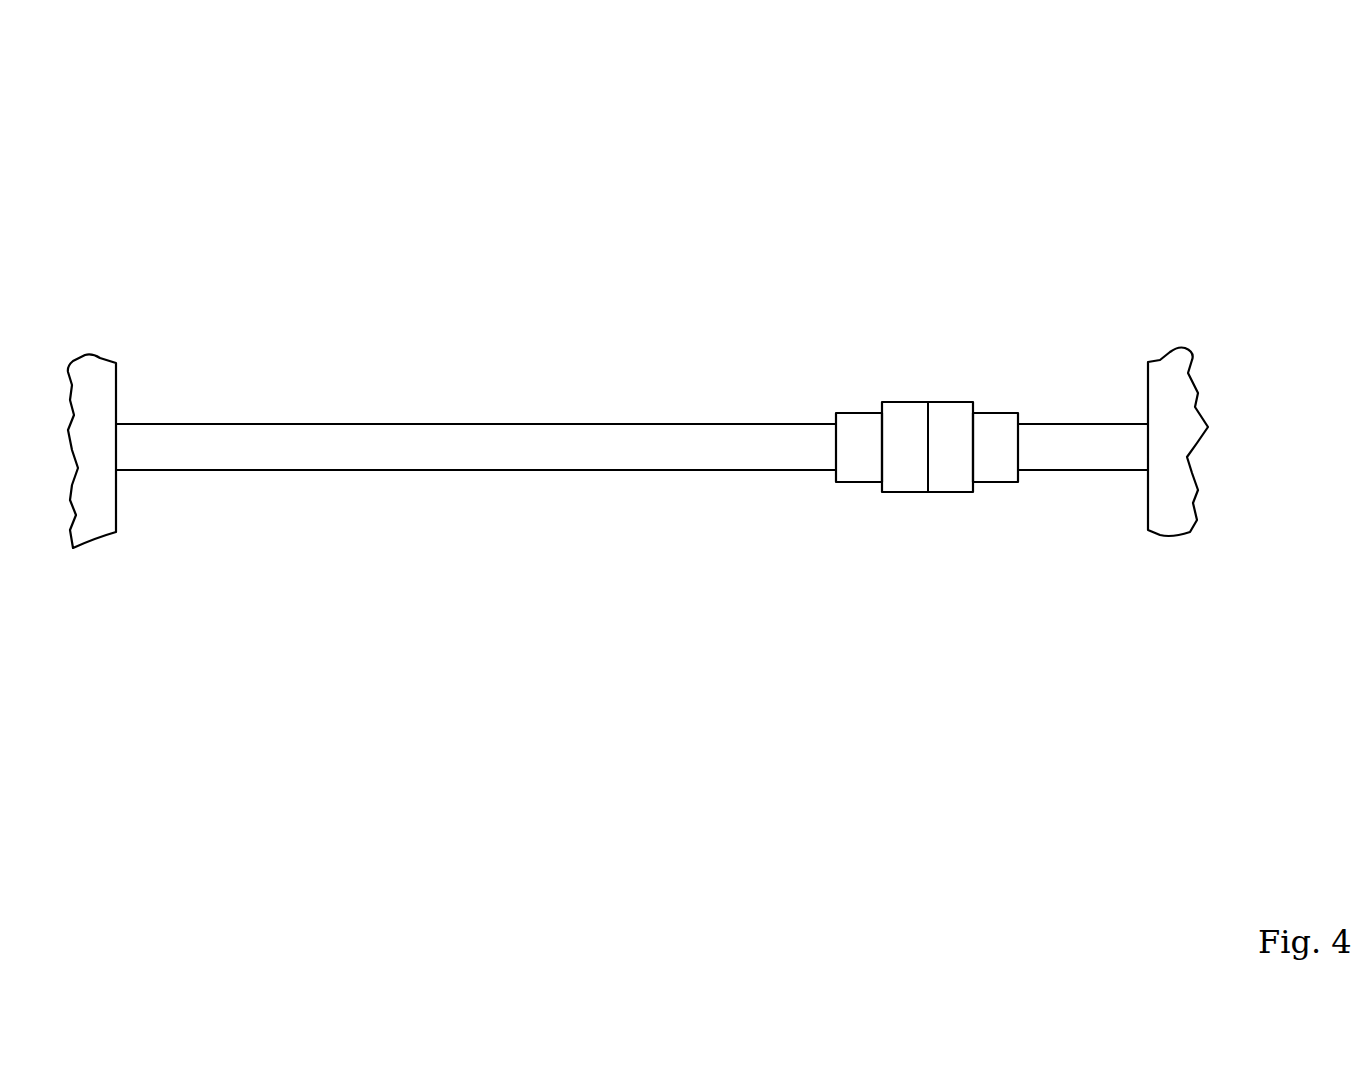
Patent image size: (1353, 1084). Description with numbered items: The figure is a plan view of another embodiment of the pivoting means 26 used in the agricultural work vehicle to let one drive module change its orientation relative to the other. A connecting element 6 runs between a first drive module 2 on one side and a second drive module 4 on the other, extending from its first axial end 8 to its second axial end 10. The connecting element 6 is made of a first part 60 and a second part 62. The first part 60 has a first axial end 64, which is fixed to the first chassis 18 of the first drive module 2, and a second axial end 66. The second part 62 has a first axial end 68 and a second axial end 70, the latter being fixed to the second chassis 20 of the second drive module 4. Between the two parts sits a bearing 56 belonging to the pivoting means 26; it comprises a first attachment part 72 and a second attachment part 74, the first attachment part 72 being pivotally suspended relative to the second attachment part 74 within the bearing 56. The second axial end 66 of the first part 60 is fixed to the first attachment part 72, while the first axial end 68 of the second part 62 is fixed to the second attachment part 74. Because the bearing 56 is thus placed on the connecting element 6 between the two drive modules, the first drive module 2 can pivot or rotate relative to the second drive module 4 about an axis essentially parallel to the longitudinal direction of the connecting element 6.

The first drive module 2 is at (1168, 377).
The second drive module 4 is at (93, 387).
The connecting element 6 is at (632, 501).
The first axial end 8 is at (1127, 462).
The second axial end 10 is at (143, 462).
The first chassis 18 is at (1169, 403).
The second chassis 20 is at (175, 417).
The pivoting means 26 is at (332, 147).
The bearing 56 is at (900, 473).
The first part 60 is at (1055, 460).
The second part 62 is at (513, 462).
The first axial end 64 is at (1147, 432).
The second axial end 66 is at (1025, 432).
The first axial end 68 is at (798, 452).
The second axial end 70 is at (142, 433).
The first attachment part 72 is at (1000, 437).
The second attachment part 74 is at (853, 465).